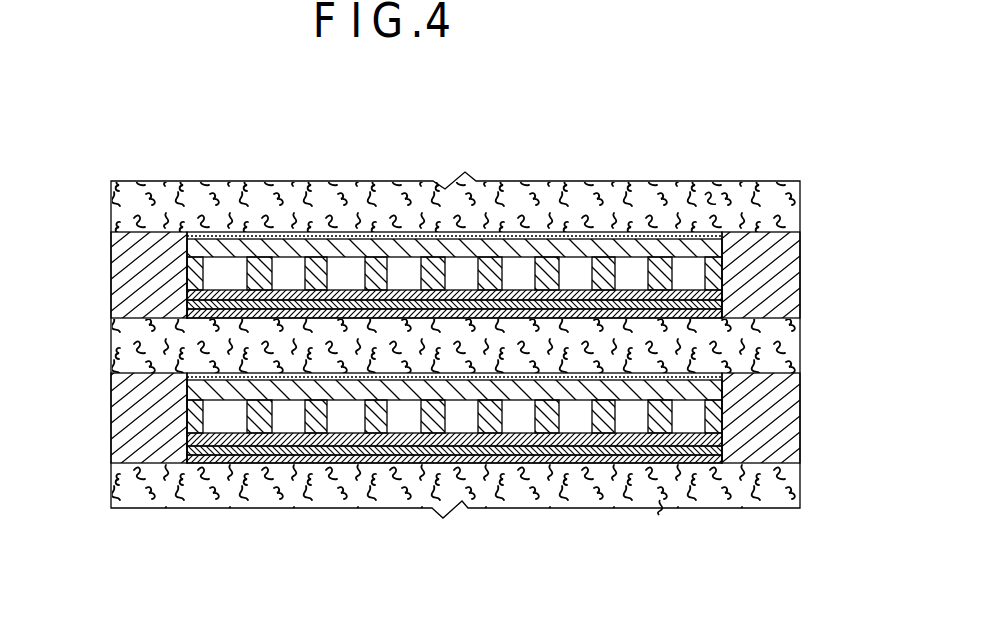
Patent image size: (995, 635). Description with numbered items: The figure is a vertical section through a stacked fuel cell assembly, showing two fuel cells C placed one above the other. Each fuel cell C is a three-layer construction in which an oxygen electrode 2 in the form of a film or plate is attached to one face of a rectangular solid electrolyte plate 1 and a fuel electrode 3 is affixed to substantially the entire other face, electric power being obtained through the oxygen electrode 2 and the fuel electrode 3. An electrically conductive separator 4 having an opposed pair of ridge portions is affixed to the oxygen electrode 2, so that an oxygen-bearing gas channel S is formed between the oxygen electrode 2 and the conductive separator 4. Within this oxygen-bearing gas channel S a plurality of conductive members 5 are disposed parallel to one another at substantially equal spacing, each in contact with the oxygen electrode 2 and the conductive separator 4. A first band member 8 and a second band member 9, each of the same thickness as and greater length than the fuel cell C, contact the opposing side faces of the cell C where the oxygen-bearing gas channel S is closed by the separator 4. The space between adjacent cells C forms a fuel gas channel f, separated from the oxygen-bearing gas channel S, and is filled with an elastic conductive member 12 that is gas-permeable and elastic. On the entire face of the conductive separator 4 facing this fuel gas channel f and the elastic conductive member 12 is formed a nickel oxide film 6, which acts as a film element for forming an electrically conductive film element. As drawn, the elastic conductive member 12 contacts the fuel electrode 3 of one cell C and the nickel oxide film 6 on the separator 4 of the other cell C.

The solid electrolyte plate 1 is at (705, 300).
The oxygen electrode 2 is at (700, 286).
The fuel electrode 3 is at (713, 318).
The conductive separator 4 is at (203, 237).
The conductive members 5 is at (307, 262).
The nickel oxide film 6 is at (483, 234).
The first band member 8 is at (111, 288).
The second band member 9 is at (797, 246).
The elastic conductive member 12 is at (623, 192).
The fuel cell C is at (186, 267).
The oxygen-bearing gas channel S is at (350, 278).
The fuel gas channel f is at (714, 196).